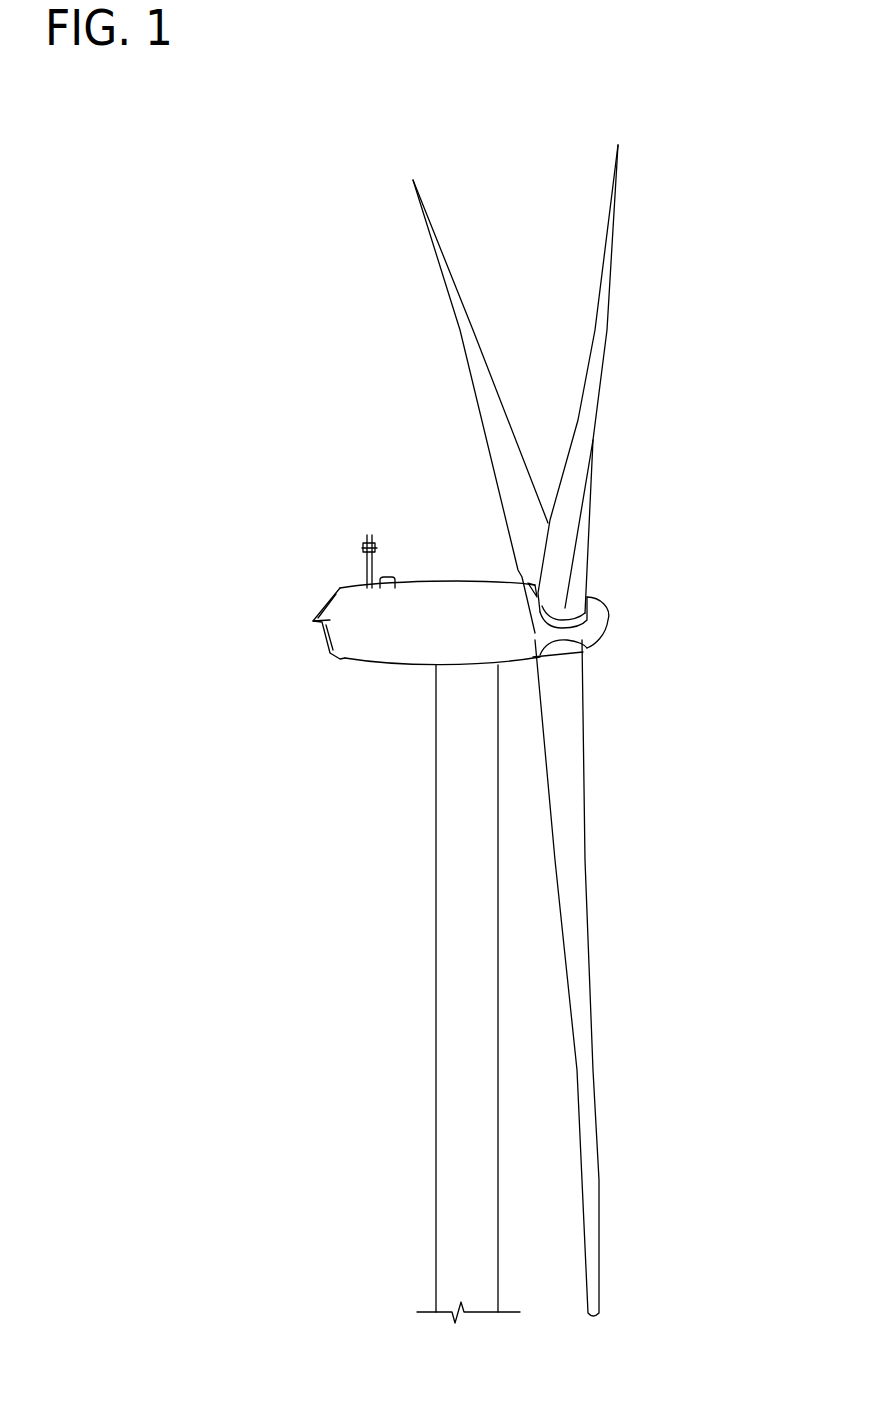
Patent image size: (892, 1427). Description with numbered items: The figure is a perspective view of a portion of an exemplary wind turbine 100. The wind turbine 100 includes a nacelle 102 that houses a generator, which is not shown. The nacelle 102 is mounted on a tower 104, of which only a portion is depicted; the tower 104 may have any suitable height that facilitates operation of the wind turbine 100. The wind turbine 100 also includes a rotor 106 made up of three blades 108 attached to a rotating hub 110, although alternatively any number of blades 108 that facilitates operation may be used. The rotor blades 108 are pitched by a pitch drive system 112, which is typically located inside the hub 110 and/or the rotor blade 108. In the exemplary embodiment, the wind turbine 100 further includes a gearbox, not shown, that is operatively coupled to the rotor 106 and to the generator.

The wind turbine 100 is at (303, 228).
The nacelle 102 is at (363, 667).
The tower 104 is at (435, 938).
The rotor 106 is at (660, 362).
The blades 108 is at (452, 265).
The rotating hub 110 is at (602, 632).
The pitch drive system 112 is at (585, 610).